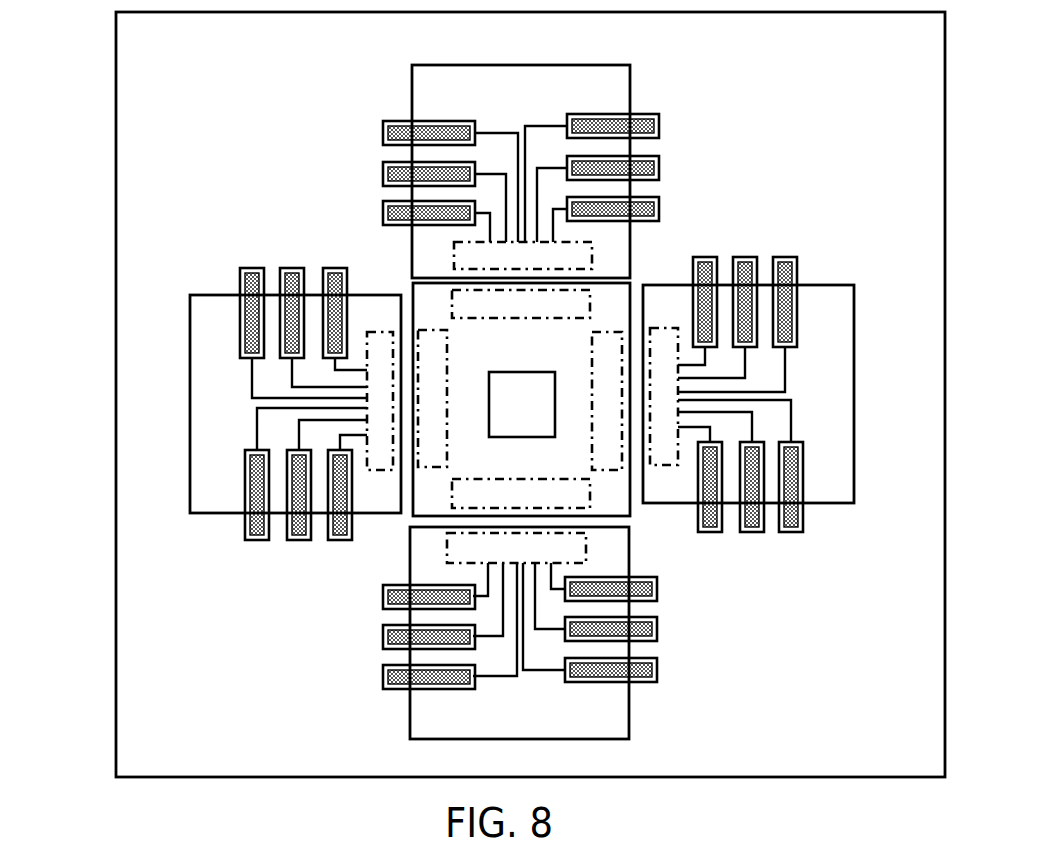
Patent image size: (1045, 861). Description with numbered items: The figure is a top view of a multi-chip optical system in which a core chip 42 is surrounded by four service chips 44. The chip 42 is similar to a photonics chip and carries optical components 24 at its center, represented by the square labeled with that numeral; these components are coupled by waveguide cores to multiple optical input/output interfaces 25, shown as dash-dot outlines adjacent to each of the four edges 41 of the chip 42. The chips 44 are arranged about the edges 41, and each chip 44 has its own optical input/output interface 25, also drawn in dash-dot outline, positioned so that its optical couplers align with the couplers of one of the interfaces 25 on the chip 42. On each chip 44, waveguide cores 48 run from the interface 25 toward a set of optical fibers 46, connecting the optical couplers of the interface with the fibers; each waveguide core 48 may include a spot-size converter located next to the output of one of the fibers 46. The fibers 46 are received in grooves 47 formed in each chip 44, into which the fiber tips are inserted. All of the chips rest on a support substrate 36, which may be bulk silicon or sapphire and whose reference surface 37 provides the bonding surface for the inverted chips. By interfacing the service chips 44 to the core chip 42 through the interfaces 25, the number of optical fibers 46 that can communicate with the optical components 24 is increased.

The optical components 24 is at (533, 421).
The optical input/output interface 25 is at (455, 252).
The support substrate 36 is at (172, 152).
The reference surface 37 is at (212, 733).
The edges 41 is at (632, 508).
The chip 42 is at (649, 271).
The chips 44 is at (670, 94).
The optical fibers 46 is at (402, 133).
The grooves 47 is at (245, 480).
The waveguide cores 48 is at (251, 381).